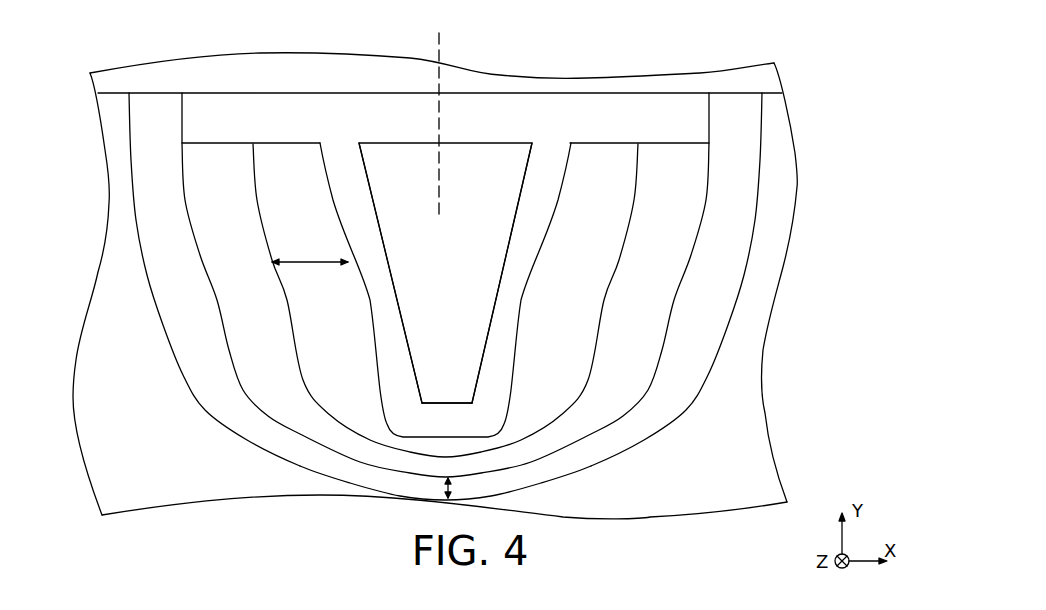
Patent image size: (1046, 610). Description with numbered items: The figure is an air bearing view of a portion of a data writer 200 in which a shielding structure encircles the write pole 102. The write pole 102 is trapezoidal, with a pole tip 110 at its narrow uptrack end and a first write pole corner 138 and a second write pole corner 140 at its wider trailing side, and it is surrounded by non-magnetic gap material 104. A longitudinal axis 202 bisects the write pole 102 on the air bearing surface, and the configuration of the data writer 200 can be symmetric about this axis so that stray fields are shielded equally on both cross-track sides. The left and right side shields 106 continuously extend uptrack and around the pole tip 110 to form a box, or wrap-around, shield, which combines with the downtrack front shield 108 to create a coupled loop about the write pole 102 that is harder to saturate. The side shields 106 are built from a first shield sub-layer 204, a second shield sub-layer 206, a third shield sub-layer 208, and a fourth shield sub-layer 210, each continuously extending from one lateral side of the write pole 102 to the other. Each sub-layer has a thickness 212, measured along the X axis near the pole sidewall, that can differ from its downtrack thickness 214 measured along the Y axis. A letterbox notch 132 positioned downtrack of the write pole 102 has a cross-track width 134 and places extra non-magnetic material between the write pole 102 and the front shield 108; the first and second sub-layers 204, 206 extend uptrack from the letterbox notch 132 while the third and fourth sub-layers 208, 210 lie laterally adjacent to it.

The data writer 200 is at (793, 48).
The side shields 106 is at (91, 272).
The fourth shield sub-layer 210 is at (94, 484).
The front shield 108 is at (160, 88).
The width 134 is at (543, 494).
The third shield sub-layer 208 is at (717, 120).
The second shield sub-layer 206 is at (652, 169).
The first shield sub-layer 204 is at (584, 169).
The letterbox notch 132 is at (346, 99).
The non-magnetic gap material 104 is at (429, 429).
The write pole 102 is at (424, 281).
The first write pole corner 138 is at (374, 153).
The second write pole corner 140 is at (517, 152).
The pole tip 110 is at (443, 401).
The longitudinal axis 202 is at (439, 40).
The thickness 212 is at (293, 266).
The downtrack thickness 214 is at (445, 487).